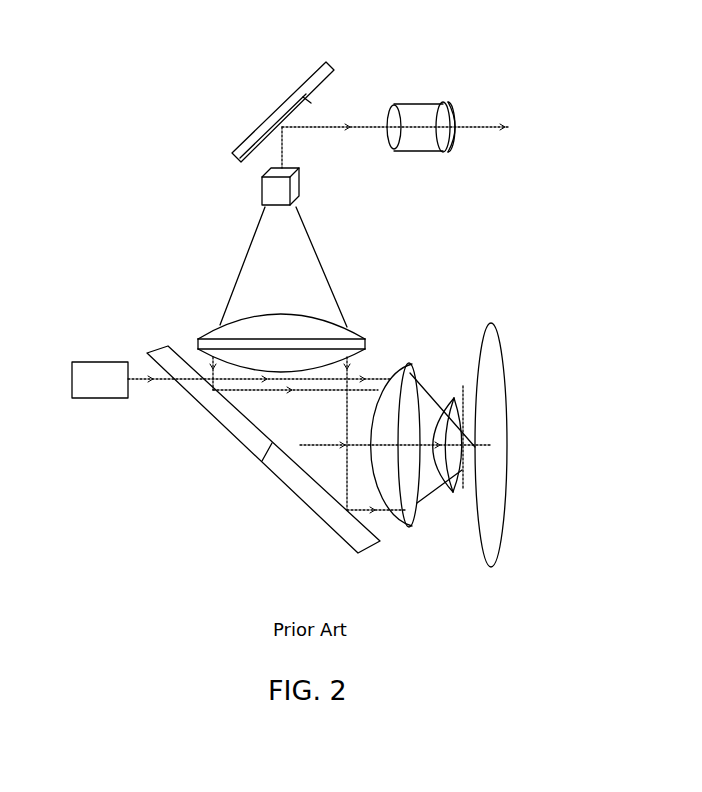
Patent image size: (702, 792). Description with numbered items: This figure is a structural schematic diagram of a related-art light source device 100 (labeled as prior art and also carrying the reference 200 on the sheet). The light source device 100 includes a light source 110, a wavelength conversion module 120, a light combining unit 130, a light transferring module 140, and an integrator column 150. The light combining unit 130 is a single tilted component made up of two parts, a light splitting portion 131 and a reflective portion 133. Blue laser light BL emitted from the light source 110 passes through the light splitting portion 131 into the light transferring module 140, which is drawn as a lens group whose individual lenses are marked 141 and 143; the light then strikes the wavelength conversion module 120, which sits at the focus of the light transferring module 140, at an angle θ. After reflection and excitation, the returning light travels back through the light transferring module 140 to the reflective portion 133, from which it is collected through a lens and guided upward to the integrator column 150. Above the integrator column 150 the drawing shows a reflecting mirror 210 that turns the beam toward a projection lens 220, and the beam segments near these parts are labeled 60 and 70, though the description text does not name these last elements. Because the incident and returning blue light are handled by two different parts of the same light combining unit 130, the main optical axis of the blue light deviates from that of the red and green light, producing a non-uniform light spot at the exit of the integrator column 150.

The light source device 100 is at (146, 334).
The light source 110 is at (118, 392).
The wavelength conversion module 120 is at (497, 542).
The light combining unit 130 is at (355, 533).
The light splitting portion 131 is at (222, 415).
The reflective portion 133 is at (297, 487).
The light transferring module 140 is at (418, 479).
The first lens 141 is at (413, 528).
The second lens 143 is at (453, 494).
The integrator column 150 is at (262, 192).
The image beam 60 is at (276, 153).
The image beam 70 is at (330, 131).
The projection apparatus 200 is at (516, 622).
The reflective mirror 210 is at (312, 78).
The projection lens 220 is at (425, 105).